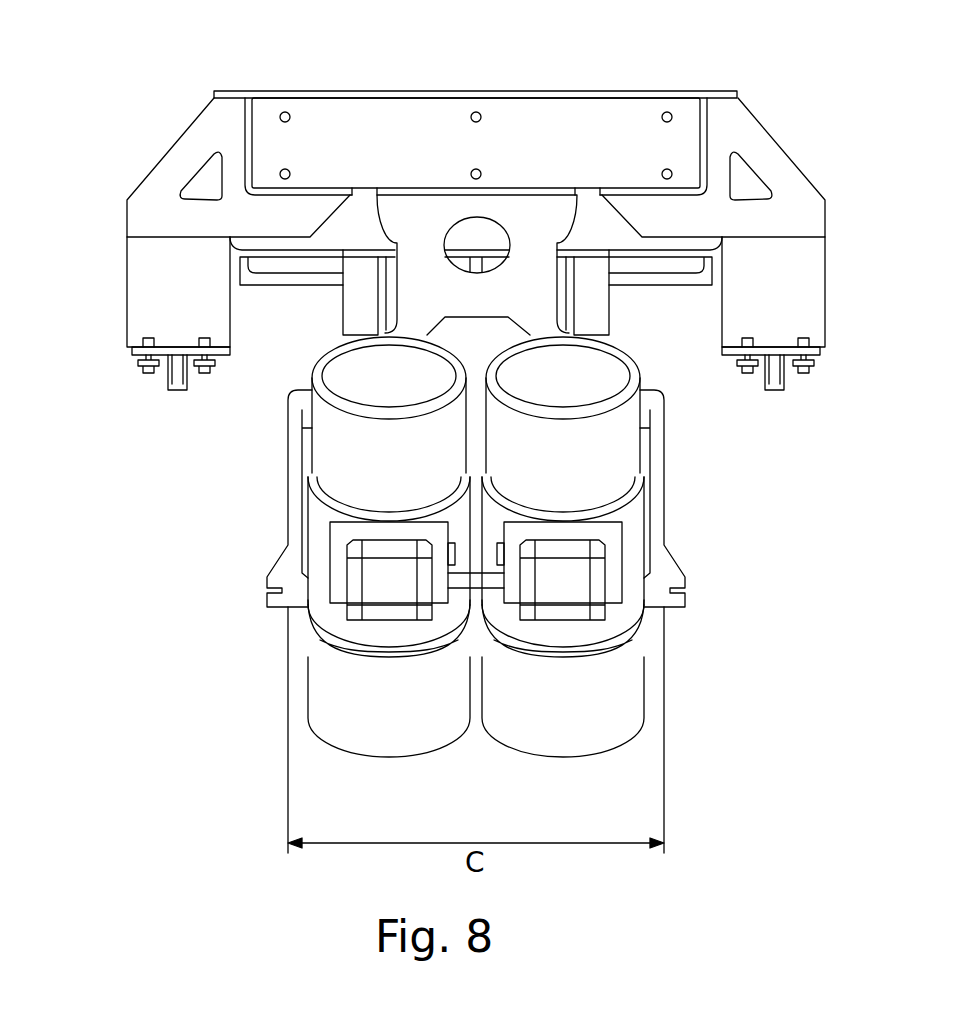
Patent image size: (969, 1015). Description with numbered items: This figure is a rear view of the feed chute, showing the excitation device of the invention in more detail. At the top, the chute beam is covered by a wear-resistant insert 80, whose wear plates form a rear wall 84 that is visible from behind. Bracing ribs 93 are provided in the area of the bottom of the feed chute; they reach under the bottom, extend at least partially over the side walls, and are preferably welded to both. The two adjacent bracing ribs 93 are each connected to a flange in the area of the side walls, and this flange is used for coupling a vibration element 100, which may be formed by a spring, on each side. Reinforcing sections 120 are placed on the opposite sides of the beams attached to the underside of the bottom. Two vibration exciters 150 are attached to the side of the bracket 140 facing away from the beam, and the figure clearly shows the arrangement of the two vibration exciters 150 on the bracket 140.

The wear-resistant insert 80 is at (552, 74).
The rear wall 84 is at (437, 115).
The bracing rib 93 is at (178, 165).
The vibration element 100 is at (143, 310).
The reinforcing section 120 is at (355, 310).
The bracket 140 is at (652, 497).
The vibration exciter 150 is at (388, 737).